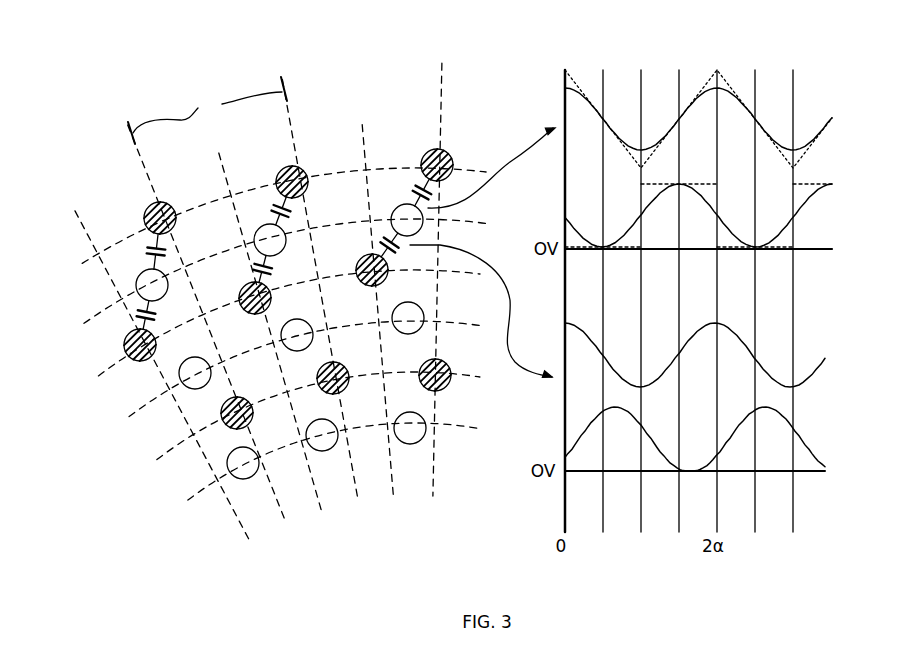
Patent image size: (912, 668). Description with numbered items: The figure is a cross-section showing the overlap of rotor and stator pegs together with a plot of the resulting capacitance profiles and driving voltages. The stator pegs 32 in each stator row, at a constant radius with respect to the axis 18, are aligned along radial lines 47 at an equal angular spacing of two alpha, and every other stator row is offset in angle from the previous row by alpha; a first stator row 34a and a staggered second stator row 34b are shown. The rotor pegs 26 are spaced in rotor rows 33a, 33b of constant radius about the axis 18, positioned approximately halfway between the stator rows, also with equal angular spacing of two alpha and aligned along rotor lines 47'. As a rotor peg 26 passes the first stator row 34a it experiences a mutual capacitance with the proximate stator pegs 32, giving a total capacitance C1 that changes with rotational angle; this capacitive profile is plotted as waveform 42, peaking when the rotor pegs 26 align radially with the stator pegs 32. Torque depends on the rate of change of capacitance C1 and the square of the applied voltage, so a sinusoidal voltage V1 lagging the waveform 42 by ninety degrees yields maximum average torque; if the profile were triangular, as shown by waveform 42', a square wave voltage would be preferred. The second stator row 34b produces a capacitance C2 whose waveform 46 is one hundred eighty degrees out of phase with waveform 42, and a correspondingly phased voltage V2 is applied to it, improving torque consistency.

The axis 18 is at (376, 548).
The rotor pegs 26 is at (259, 231).
The stator pegs 32 is at (146, 220).
The rotor row 33a is at (77, 330).
The rotor row 33b is at (114, 425).
The first stator row 34a is at (65, 277).
The second stator row 34b is at (87, 387).
The waveform 42 is at (672, 91).
The triangular waveform 42' is at (698, 100).
The waveform 46 is at (668, 344).
The radial lines 47 is at (207, 110).
The rotor lines 47' is at (223, 144).
The capacitance C1 is at (277, 208).
The capacitance C2 is at (258, 268).
The voltage waveform V1 is at (566, 228).
The voltage V2 is at (566, 445).